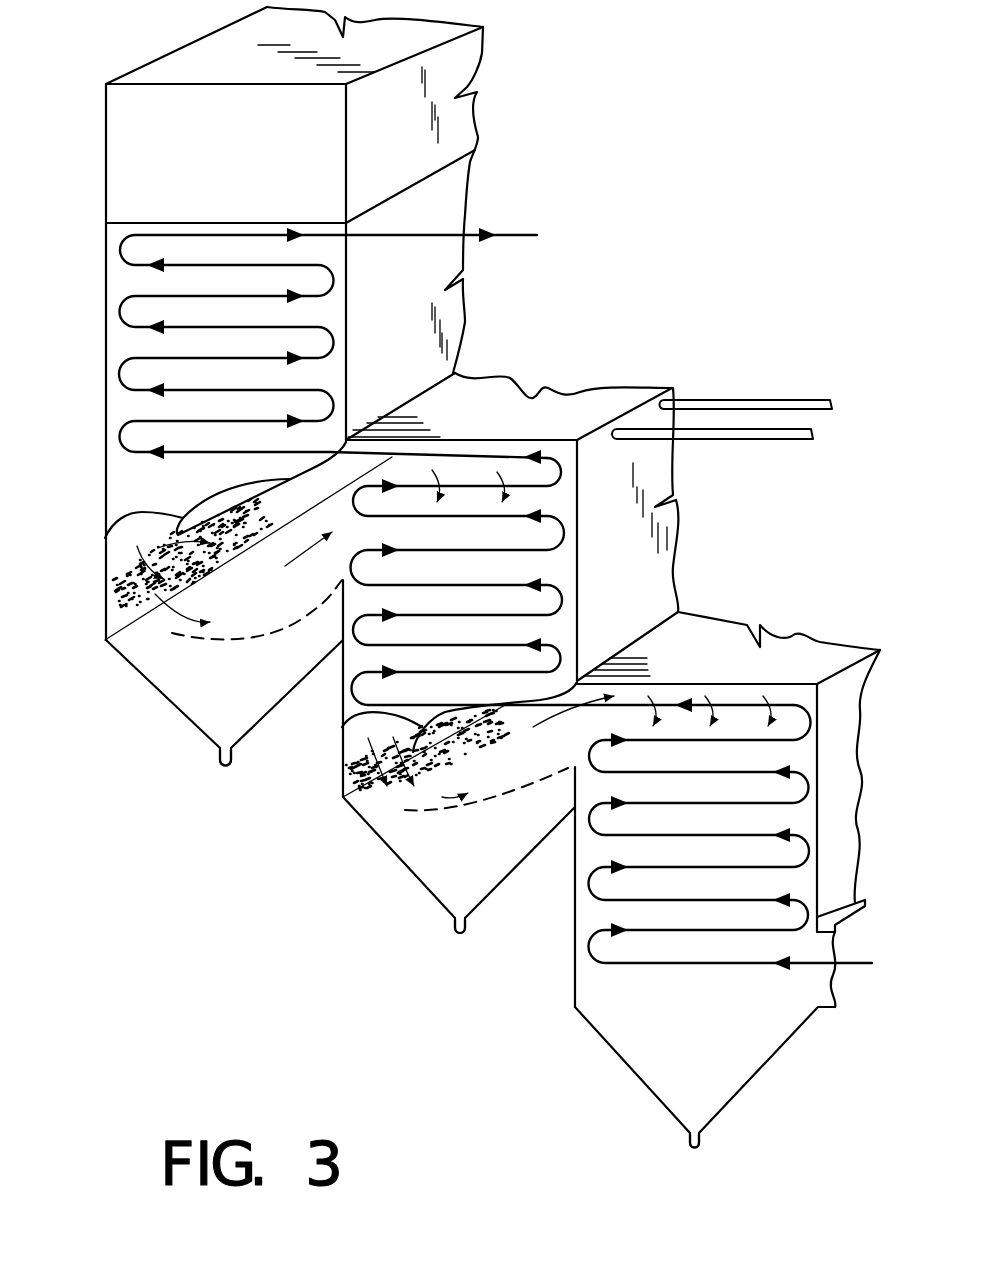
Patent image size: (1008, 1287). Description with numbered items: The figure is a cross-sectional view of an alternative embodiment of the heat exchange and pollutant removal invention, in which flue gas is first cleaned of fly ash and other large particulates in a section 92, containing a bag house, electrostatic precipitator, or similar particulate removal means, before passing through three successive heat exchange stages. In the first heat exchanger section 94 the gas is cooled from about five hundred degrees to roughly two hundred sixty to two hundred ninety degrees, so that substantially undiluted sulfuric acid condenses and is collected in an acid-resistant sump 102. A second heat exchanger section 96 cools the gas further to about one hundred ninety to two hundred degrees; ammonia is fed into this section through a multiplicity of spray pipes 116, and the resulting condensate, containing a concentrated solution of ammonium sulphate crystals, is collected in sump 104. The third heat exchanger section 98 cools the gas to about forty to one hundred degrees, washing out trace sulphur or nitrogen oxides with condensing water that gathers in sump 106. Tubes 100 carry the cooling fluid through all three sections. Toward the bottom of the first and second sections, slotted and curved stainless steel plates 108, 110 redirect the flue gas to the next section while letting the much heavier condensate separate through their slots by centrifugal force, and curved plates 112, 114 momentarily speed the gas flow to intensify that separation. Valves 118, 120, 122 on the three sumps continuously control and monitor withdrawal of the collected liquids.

The section 92 is at (253, 162).
The first heat exchanger section 94 is at (317, 318).
The second heat exchanger section 96 is at (553, 563).
The third heat exchanger section 98 is at (798, 819).
The tubes 100 is at (537, 236).
The sump 102 is at (250, 708).
The sump 104 is at (483, 870).
The sump 106 is at (717, 1078).
The slotted and curved stainless steel plate 108 is at (167, 632).
The slotted and curved stainless steel plate 110 is at (400, 800).
The curved plate 112 is at (100, 547).
The curved plate 114 is at (342, 727).
The spray pipes 116 is at (707, 437).
The valve 118 is at (222, 762).
The valve 120 is at (457, 927).
The valve 122 is at (688, 1137).